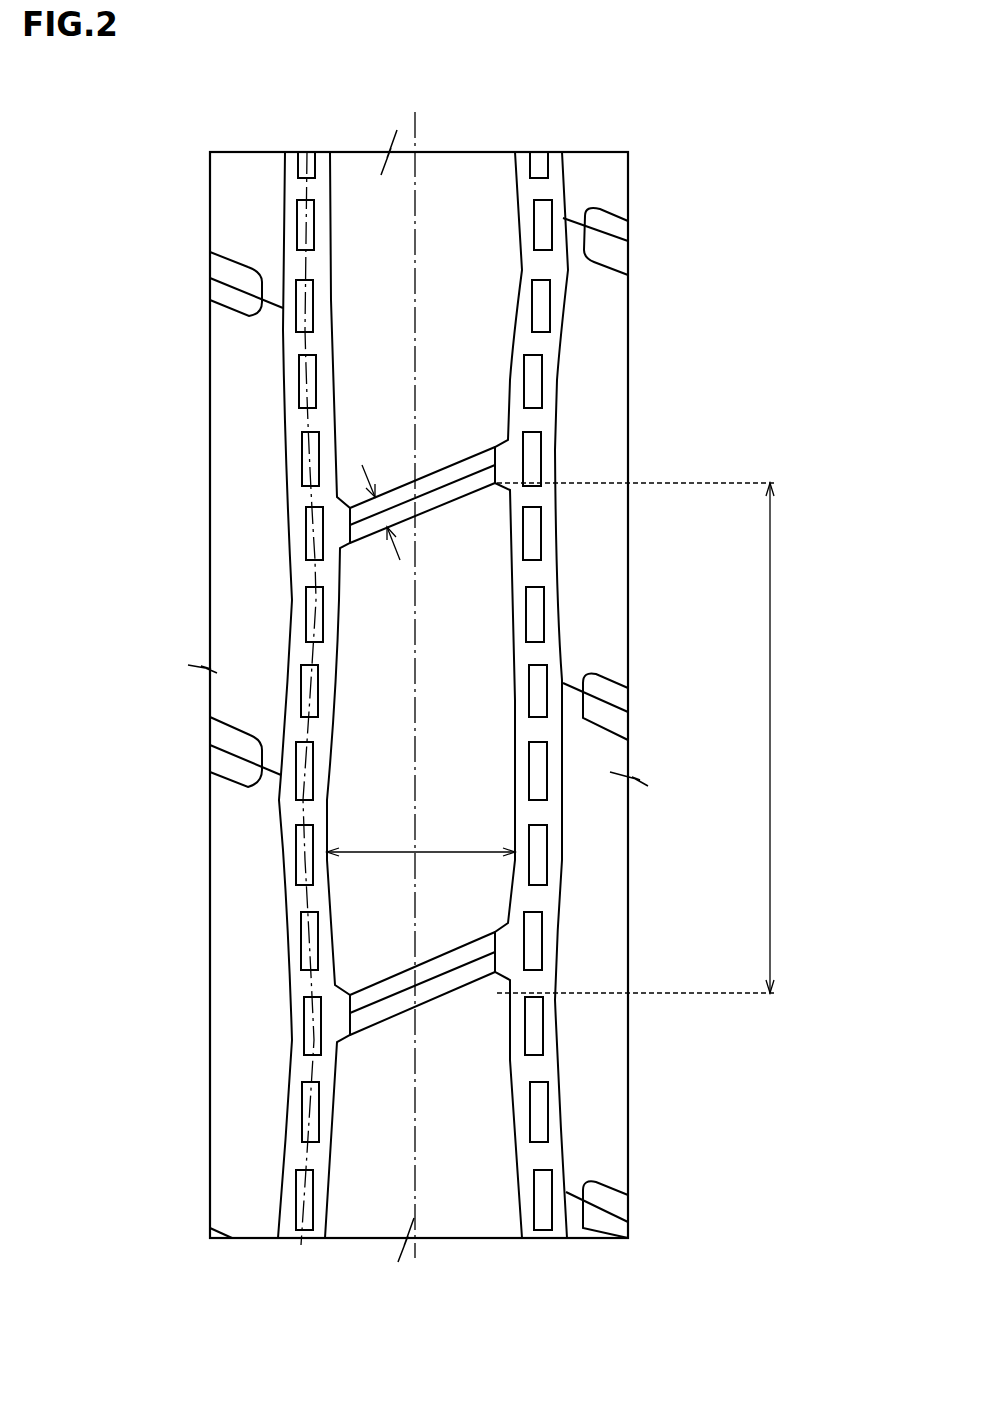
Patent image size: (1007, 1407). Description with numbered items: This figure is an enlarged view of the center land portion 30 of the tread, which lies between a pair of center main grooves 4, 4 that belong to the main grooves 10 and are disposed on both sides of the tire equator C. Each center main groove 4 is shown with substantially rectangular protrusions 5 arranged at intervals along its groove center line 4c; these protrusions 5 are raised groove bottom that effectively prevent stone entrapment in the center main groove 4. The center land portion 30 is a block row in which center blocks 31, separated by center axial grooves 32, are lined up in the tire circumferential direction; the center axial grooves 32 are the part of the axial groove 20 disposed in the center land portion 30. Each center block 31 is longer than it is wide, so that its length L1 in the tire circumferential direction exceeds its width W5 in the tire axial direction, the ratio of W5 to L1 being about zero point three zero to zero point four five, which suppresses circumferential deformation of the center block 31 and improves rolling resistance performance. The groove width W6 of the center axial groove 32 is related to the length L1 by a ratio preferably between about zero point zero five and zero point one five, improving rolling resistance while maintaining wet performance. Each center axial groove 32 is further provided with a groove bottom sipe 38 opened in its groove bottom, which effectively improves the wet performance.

The main groove 10 is at (292, 186).
The center main groove 4 is at (437, 648).
The center land portion 30 is at (447, 228).
The center block 31 is at (460, 288).
The protrusion 5 is at (540, 301).
The groove center line 4c is at (303, 232).
The tire equator C is at (418, 669).
The axial groove 20 is at (455, 472).
The center axial groove 32 is at (455, 955).
The groove bottom sipe 38 is at (440, 490).
The groove width W6 is at (375, 523).
The width W5 is at (367, 852).
The length L1 is at (654, 738).